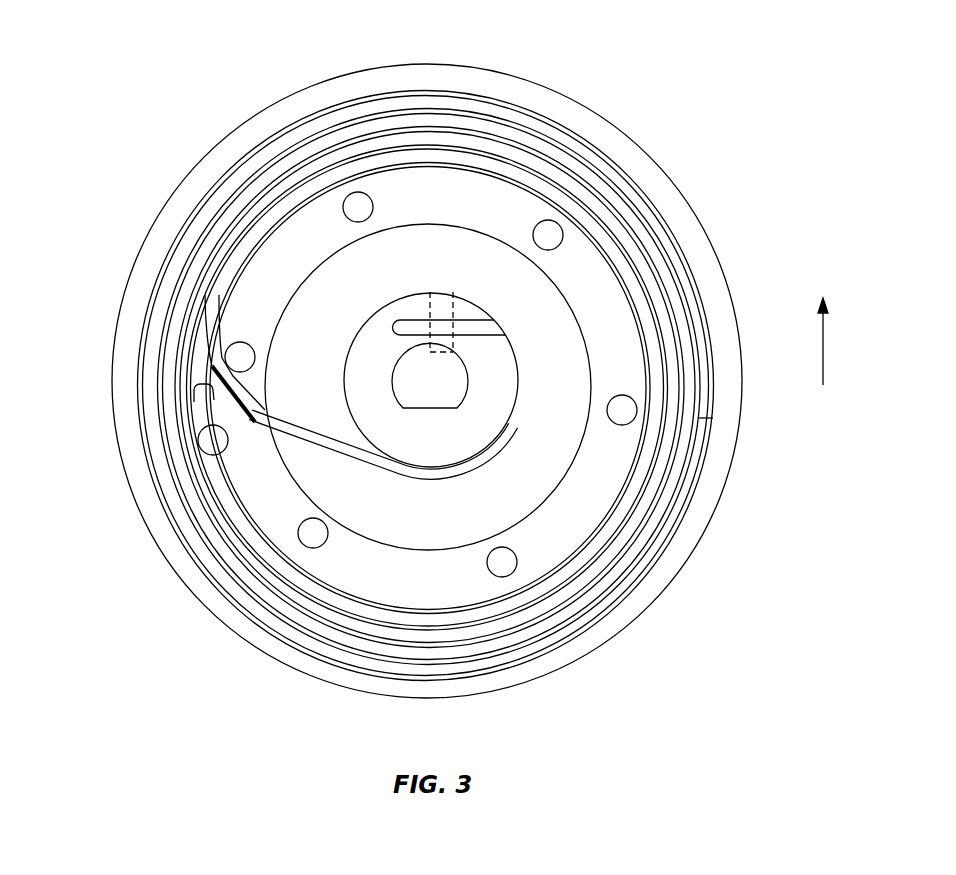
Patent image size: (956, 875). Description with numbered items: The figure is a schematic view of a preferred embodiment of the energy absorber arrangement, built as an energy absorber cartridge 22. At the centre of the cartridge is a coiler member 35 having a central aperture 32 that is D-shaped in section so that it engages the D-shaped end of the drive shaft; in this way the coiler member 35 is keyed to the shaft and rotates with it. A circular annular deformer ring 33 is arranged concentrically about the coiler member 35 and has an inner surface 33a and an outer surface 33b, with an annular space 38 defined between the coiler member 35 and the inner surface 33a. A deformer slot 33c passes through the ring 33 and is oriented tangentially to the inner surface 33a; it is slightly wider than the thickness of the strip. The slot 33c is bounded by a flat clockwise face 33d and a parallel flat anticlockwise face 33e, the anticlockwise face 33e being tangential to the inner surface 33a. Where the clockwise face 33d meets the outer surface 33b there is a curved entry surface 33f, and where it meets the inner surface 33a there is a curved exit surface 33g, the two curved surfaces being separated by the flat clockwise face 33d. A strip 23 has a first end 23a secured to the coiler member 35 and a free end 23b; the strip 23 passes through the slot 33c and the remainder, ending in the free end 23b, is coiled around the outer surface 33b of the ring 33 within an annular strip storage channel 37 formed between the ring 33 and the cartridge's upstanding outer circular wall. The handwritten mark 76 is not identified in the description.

The energy absorber cartridge 22 is at (292, 697).
The strip 23 is at (373, 108).
The first end of strip 23a is at (473, 320).
The free end of strip 23b is at (707, 380).
The central aperture 32 is at (447, 382).
The deformer ring 33 is at (560, 528).
The inner surface of deformer ring 33a is at (340, 247).
The outer surface of deformer ring 33b is at (407, 168).
The deformer slot 33c is at (225, 390).
The clockwise face of slot 33d is at (228, 362).
The anticlockwise face of slot 33e is at (205, 400).
The curved entry surface 33f is at (223, 335).
The curved exit surface 33g is at (263, 408).
The coiler member 35 is at (477, 413).
The annular space 38 is at (459, 380).
The annotation 76 is at (690, 205).
The annular strip storage channel 37 is at (693, 487).